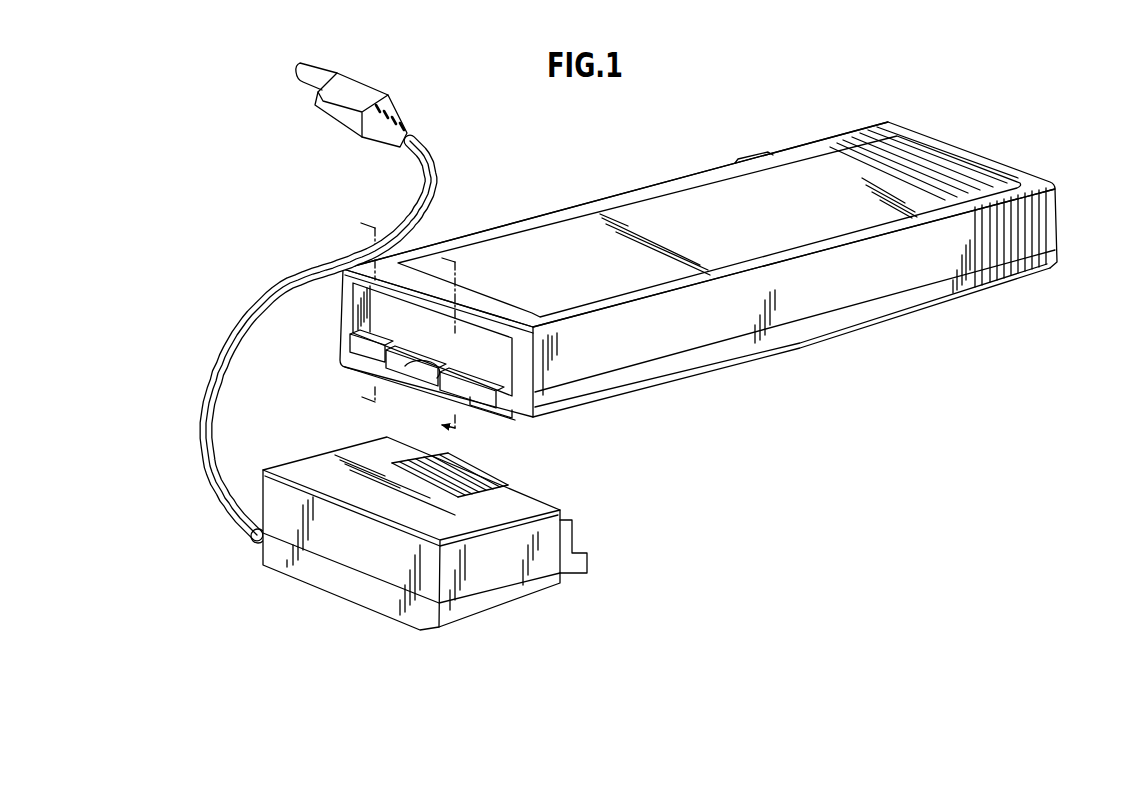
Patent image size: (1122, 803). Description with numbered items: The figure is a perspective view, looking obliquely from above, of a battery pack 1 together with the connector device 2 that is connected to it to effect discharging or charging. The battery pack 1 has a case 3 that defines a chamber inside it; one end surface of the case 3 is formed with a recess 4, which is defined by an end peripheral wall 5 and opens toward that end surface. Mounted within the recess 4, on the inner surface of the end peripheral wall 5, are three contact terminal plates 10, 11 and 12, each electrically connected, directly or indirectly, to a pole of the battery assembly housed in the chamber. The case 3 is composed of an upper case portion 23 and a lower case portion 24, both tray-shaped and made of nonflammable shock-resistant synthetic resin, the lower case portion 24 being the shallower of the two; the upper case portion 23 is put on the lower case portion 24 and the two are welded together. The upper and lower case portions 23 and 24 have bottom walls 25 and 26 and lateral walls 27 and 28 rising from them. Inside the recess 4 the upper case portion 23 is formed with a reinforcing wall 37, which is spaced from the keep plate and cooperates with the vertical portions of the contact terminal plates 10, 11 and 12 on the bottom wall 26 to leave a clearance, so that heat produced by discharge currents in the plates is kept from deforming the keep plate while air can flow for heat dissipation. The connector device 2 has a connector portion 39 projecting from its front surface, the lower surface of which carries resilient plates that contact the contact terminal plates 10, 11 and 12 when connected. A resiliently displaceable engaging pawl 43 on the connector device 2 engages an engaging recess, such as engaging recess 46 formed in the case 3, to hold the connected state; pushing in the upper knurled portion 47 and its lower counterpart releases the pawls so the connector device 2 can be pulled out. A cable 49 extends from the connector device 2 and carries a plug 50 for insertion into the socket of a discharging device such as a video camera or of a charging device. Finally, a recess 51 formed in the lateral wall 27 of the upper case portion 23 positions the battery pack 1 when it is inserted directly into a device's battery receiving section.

The battery pack 1 is at (654, 282).
The connector device 2 is at (444, 539).
The case 3 is at (663, 181).
The recess 4 is at (382, 339).
The end peripheral wall 5 is at (508, 356).
The contact terminal plate 10 is at (387, 343).
The contact terminal plate 11 is at (373, 383).
The contact terminal plate 12 is at (487, 410).
The upper case portion 23 is at (593, 203).
The lower case portion 24 is at (775, 357).
The bottom wall 25 is at (817, 170).
The bottom wall 26 is at (410, 400).
The lateral wall 27 is at (915, 265).
The lateral wall 28 is at (817, 328).
The reinforcing wall 37 is at (408, 330).
The connector portion 39 is at (593, 564).
The engaging pawl 43 is at (510, 484).
The engaging recess 46 is at (437, 378).
The upper knurled portion 47 is at (480, 473).
The cable 49 is at (436, 150).
The plug 50 is at (362, 80).
The recess 51 is at (770, 153).